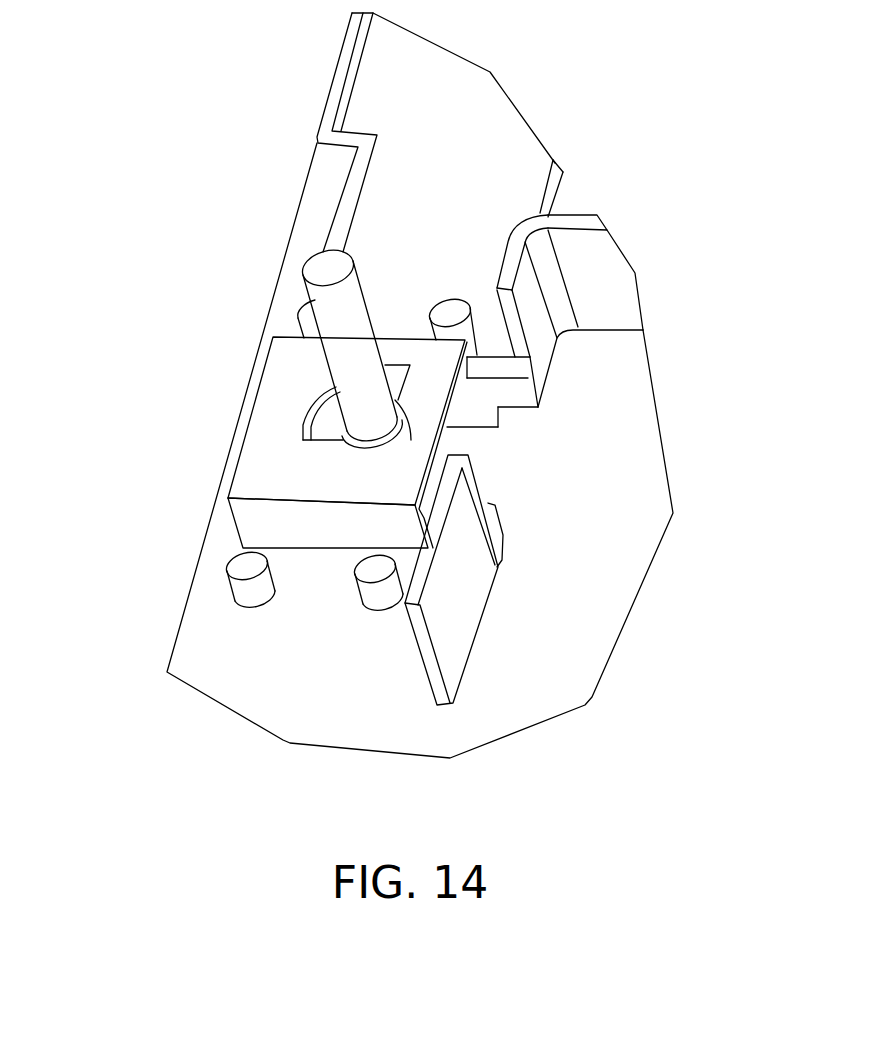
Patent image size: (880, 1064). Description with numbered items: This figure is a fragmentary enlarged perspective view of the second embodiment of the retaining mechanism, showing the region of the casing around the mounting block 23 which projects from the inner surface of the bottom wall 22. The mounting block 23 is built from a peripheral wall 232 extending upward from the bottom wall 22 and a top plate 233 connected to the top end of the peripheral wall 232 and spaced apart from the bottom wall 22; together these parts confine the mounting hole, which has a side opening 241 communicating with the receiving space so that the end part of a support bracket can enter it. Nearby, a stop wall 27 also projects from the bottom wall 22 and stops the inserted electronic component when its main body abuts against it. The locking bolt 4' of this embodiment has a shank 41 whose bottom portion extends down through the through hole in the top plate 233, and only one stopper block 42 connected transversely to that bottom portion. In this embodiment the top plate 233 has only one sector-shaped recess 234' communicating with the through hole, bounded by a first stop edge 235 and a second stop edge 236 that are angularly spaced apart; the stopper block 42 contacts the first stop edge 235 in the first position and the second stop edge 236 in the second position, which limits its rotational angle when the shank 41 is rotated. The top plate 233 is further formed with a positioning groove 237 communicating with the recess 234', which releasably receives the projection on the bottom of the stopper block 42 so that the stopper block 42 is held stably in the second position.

The locking bolt 4' is at (406, 263).
The bottom wall 22 is at (148, 652).
The mounting block 23 is at (277, 555).
The stop wall 27 is at (458, 617).
The shank 41 is at (335, 307).
The stopper block 42 is at (398, 373).
The peripheral wall 232 is at (335, 533).
The top plate 233 is at (265, 470).
The sector-shaped recess 234' is at (279, 401).
The first stop edge 235 is at (410, 384).
The second stop edge 236 is at (295, 503).
The positioning groove 237 is at (302, 437).
The side opening 241 is at (472, 443).